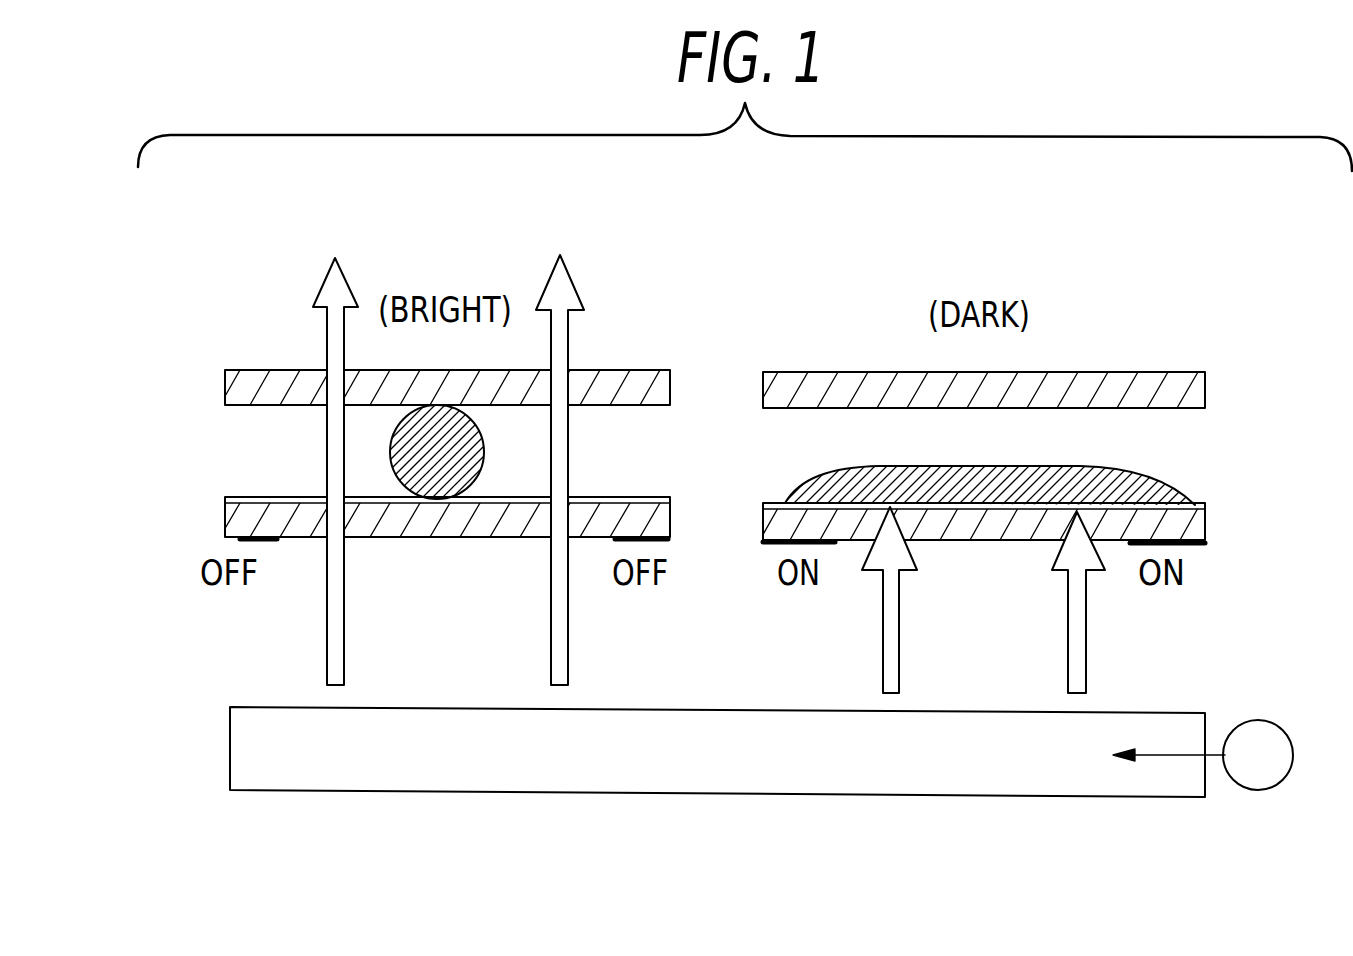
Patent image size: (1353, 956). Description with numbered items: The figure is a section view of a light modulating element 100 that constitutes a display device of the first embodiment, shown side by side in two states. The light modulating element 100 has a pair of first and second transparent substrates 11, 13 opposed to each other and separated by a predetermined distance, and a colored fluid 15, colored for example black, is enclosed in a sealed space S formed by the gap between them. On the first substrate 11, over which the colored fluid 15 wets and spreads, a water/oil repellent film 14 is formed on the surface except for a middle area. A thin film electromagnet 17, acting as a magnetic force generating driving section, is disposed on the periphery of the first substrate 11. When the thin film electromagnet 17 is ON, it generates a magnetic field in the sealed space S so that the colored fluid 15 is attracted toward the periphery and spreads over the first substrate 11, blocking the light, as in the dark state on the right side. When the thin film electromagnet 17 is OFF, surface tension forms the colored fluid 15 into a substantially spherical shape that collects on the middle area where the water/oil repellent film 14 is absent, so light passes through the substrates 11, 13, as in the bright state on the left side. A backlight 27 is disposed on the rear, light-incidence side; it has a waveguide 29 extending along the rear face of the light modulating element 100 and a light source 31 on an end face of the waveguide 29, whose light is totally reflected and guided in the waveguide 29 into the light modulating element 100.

The light modulating element 100 is at (250, 308).
The second transparent substrate 13 is at (225, 390).
The first transparent substrate 11 is at (225, 515).
The water/oil repellent film 14 is at (225, 498).
The thin film electromagnet 17 is at (272, 541).
The colored fluid 15 is at (437, 472).
The sealed space S is at (280, 455).
The waveguide 29 is at (270, 768).
The backlight 27 is at (1230, 690).
The light source 31 is at (1268, 757).